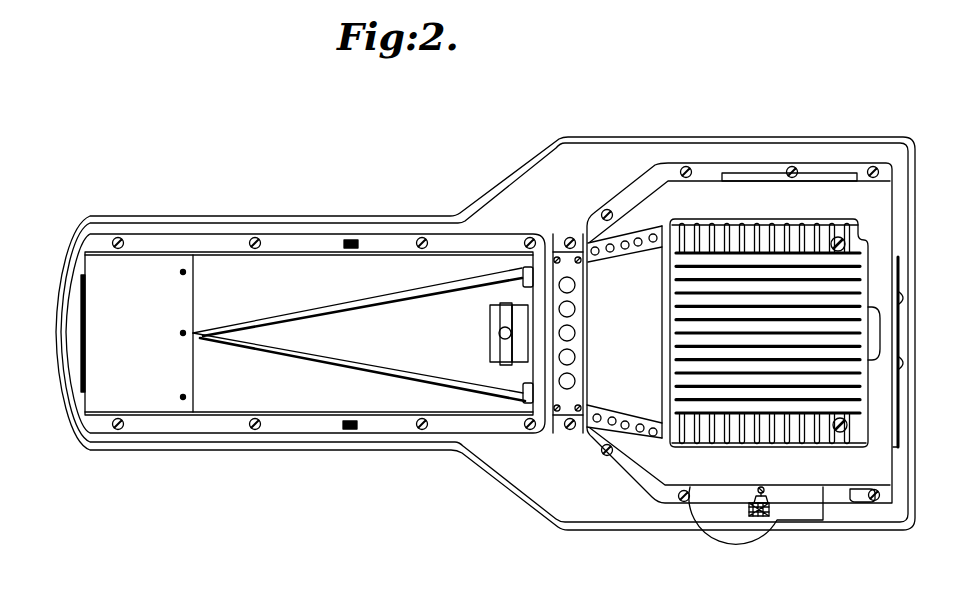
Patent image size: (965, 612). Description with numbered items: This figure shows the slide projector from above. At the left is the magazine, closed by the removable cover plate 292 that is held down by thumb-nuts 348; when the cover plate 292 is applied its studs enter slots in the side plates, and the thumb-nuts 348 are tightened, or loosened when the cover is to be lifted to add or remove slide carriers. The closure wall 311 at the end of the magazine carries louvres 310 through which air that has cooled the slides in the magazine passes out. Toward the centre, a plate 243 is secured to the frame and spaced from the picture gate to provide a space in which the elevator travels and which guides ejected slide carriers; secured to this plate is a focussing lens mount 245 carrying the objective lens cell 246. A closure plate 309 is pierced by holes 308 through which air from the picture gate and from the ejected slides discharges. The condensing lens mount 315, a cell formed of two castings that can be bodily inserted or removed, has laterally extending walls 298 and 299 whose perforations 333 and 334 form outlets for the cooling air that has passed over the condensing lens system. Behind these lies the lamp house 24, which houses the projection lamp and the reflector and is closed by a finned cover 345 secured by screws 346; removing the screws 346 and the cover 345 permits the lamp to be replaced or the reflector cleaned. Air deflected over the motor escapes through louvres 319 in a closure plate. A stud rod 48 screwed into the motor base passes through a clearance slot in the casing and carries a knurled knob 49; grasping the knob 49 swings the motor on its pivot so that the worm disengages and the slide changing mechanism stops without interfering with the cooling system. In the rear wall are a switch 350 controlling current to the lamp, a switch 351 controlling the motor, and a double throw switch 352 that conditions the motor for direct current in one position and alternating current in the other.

The lamp house 24 is at (868, 264).
The stud rod 48 is at (763, 488).
The knurled handle or knob 49 is at (769, 508).
The plate 243 is at (525, 400).
The focussing lens mount 245 is at (519, 353).
The objective lens cell 246 is at (492, 333).
The cover plate 292 is at (280, 268).
The laterally extending wall 298 is at (618, 234).
The laterally extending wall 299 is at (630, 436).
The holes 308 is at (572, 355).
The closure plate 309 is at (567, 418).
The louvres 310 is at (82, 348).
The closure wall 311 is at (97, 317).
The condensing lens mount 315 is at (576, 289).
The louvres 319 is at (900, 276).
The perforations 333 is at (626, 249).
The perforations 334 is at (626, 421).
The finned cover 345 is at (770, 238).
The screws 346 is at (841, 237).
The thumb-nuts 348 is at (352, 240).
The switch 350 is at (905, 298).
The switch 351 is at (905, 363).
The double throw switch 352 is at (862, 503).